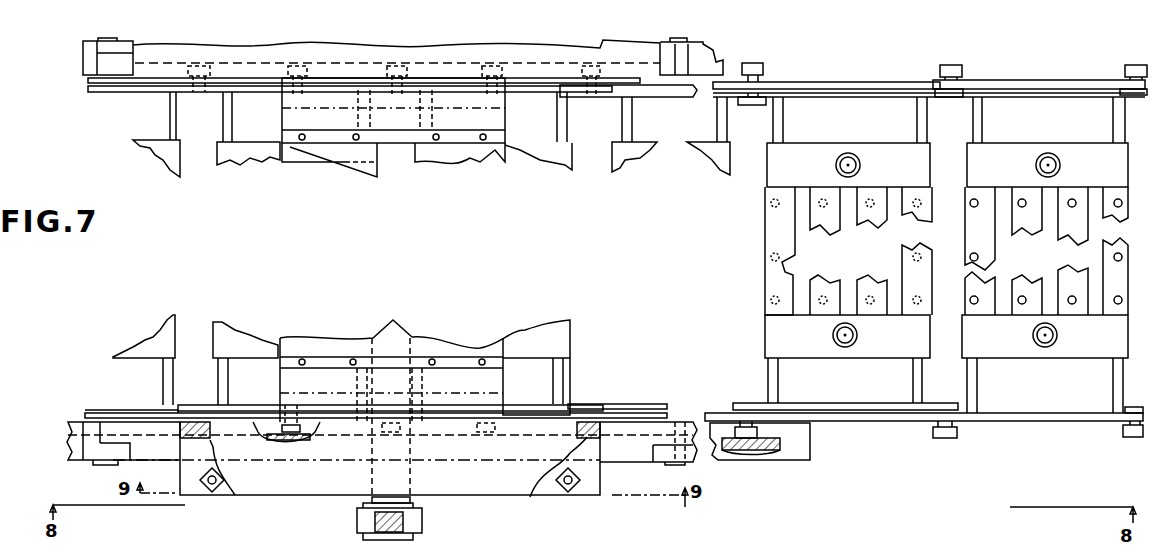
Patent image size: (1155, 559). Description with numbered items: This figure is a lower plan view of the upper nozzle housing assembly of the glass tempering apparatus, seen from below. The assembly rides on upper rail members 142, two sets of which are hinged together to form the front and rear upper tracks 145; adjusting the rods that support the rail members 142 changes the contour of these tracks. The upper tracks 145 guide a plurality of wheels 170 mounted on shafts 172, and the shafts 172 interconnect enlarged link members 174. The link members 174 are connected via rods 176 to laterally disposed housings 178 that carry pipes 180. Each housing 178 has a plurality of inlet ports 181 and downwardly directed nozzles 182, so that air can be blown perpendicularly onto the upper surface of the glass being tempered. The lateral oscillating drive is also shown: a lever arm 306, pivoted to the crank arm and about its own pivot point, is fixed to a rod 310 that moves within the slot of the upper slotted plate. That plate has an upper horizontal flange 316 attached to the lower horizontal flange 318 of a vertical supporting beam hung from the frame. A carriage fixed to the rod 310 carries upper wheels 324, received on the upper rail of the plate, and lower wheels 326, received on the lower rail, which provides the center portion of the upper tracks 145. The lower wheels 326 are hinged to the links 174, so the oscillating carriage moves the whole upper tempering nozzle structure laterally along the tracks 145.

The upper rail members 142 is at (792, 458).
The upper tracks 145 is at (66, 452).
The wheels 170 is at (1125, 78).
The shafts 172 is at (940, 80).
The enlarged link members 174 is at (173, 92).
The rods 176 is at (218, 386).
The housings 178 is at (217, 157).
The pipes 180 is at (1007, 287).
The inlet ports 181 is at (836, 165).
The nozzles 182 is at (772, 296).
The lever arm 306 is at (372, 522).
The rod 310 is at (412, 498).
The upper horizontal flange 316 is at (488, 490).
The lower horizontal flange 318 is at (530, 497).
The upper wheels 324 is at (315, 436).
The lower wheels 326 is at (412, 432).